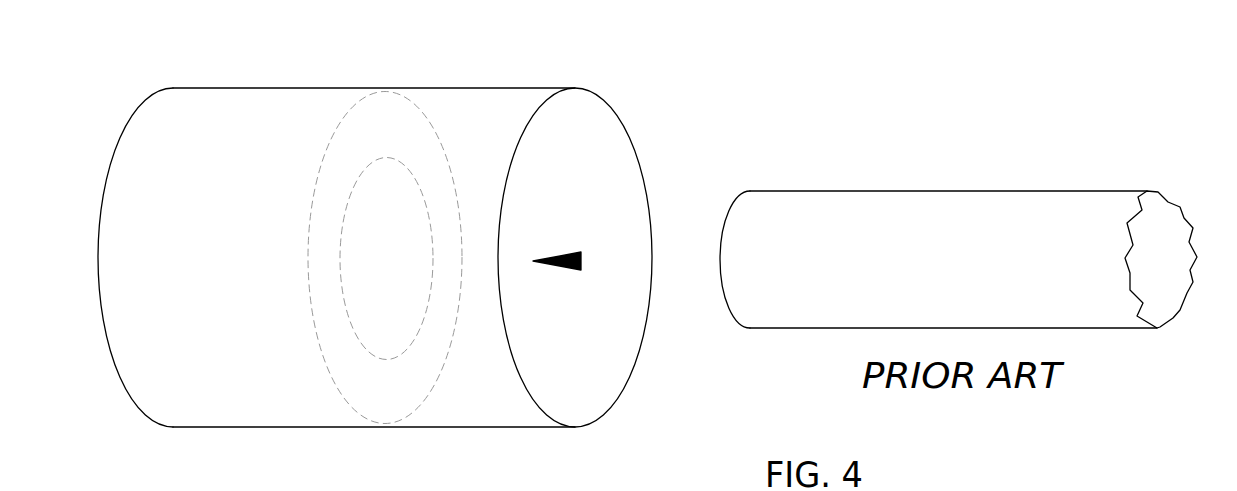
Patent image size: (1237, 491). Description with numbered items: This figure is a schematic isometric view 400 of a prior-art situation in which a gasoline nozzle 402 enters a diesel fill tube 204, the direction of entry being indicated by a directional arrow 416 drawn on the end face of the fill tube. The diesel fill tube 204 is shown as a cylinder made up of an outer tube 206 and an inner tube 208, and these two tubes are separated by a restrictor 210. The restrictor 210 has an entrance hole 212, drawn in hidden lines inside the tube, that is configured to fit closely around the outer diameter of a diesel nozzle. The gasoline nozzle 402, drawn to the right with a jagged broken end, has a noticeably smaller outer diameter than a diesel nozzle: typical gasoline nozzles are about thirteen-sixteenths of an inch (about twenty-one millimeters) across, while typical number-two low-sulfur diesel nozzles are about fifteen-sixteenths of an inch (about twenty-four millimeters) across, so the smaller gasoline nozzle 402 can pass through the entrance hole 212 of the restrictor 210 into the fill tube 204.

The diesel fill tube 204 is at (613, 357).
The outer tube 206 is at (478, 418).
The inner tube 208 is at (172, 415).
The restrictor 210 is at (347, 356).
The entrance hole 212 is at (385, 221).
The directional arrow 416 is at (560, 223).
The schematic isometric view 400 is at (830, 153).
The gasoline nozzle 402 is at (1080, 198).